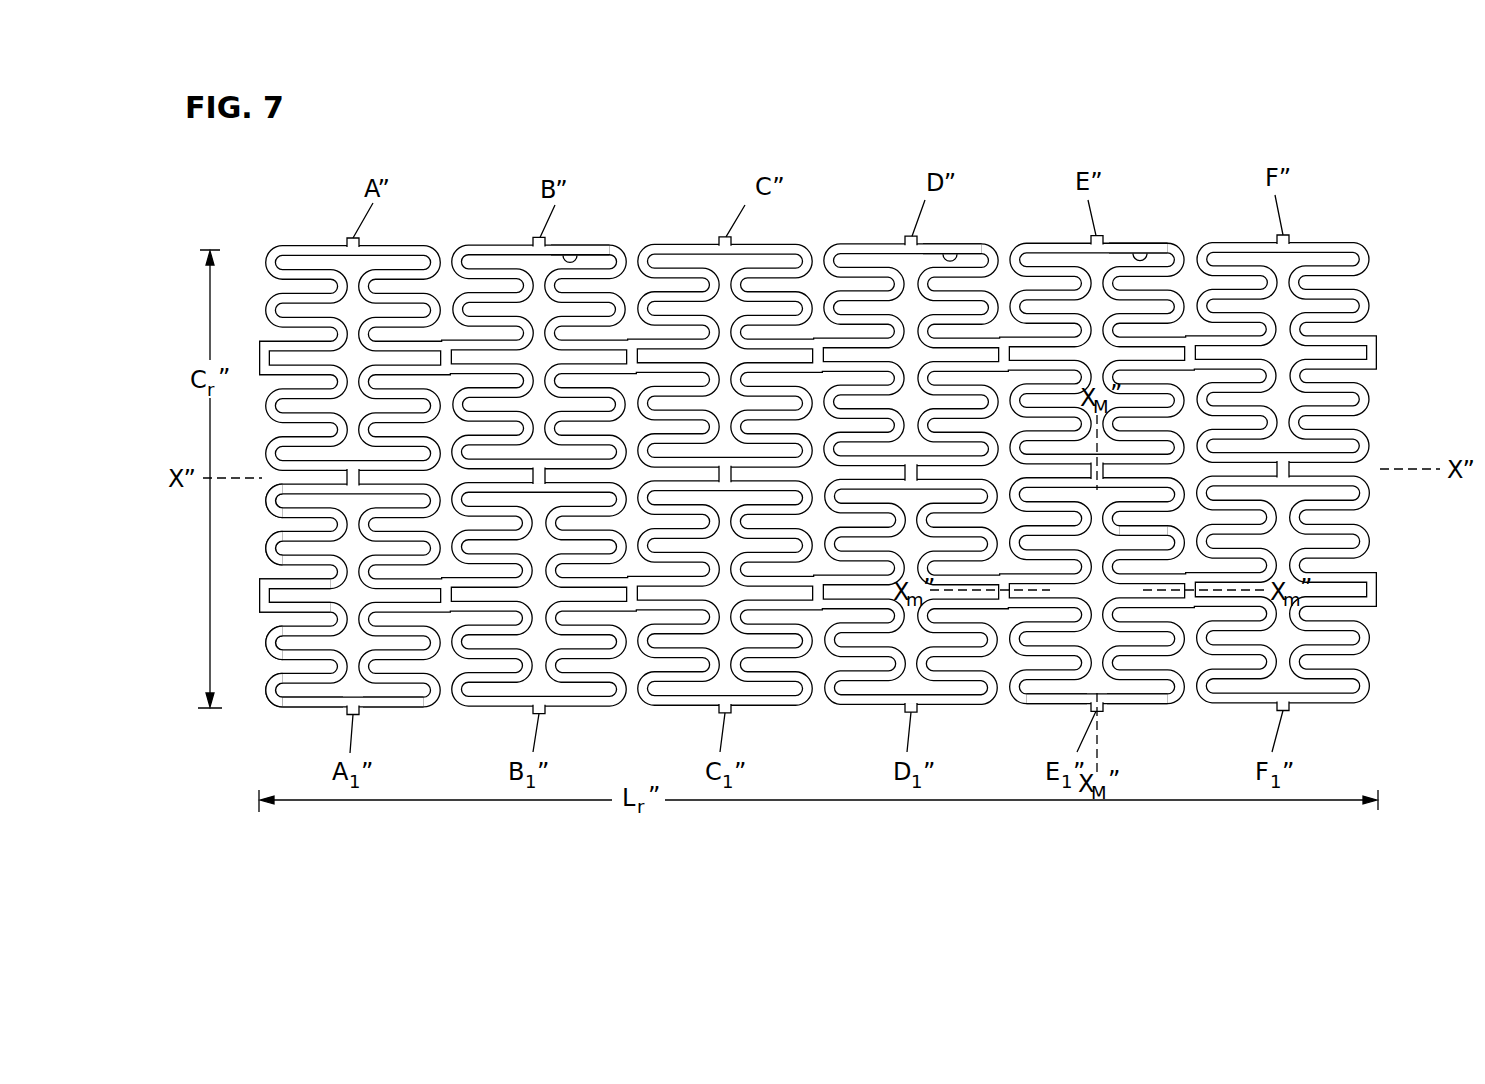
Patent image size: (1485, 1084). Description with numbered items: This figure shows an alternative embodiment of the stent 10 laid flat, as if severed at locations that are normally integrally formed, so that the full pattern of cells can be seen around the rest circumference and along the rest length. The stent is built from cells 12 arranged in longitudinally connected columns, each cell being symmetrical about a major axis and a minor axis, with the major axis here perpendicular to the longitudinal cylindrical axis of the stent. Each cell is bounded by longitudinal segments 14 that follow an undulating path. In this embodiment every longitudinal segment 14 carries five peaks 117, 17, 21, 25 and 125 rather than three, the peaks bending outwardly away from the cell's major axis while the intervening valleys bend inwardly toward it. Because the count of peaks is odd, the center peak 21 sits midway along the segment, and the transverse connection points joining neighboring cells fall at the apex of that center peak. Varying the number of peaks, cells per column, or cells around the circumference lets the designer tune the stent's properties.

The stent 10 is at (830, 213).
The cell 12 is at (574, 261).
The longitudinal segment 14 is at (304, 717).
The peak 125 is at (265, 500).
The peak 25 is at (265, 548).
The peak 21 is at (261, 596).
The peak 17 is at (265, 643).
The peak 117 is at (268, 690).